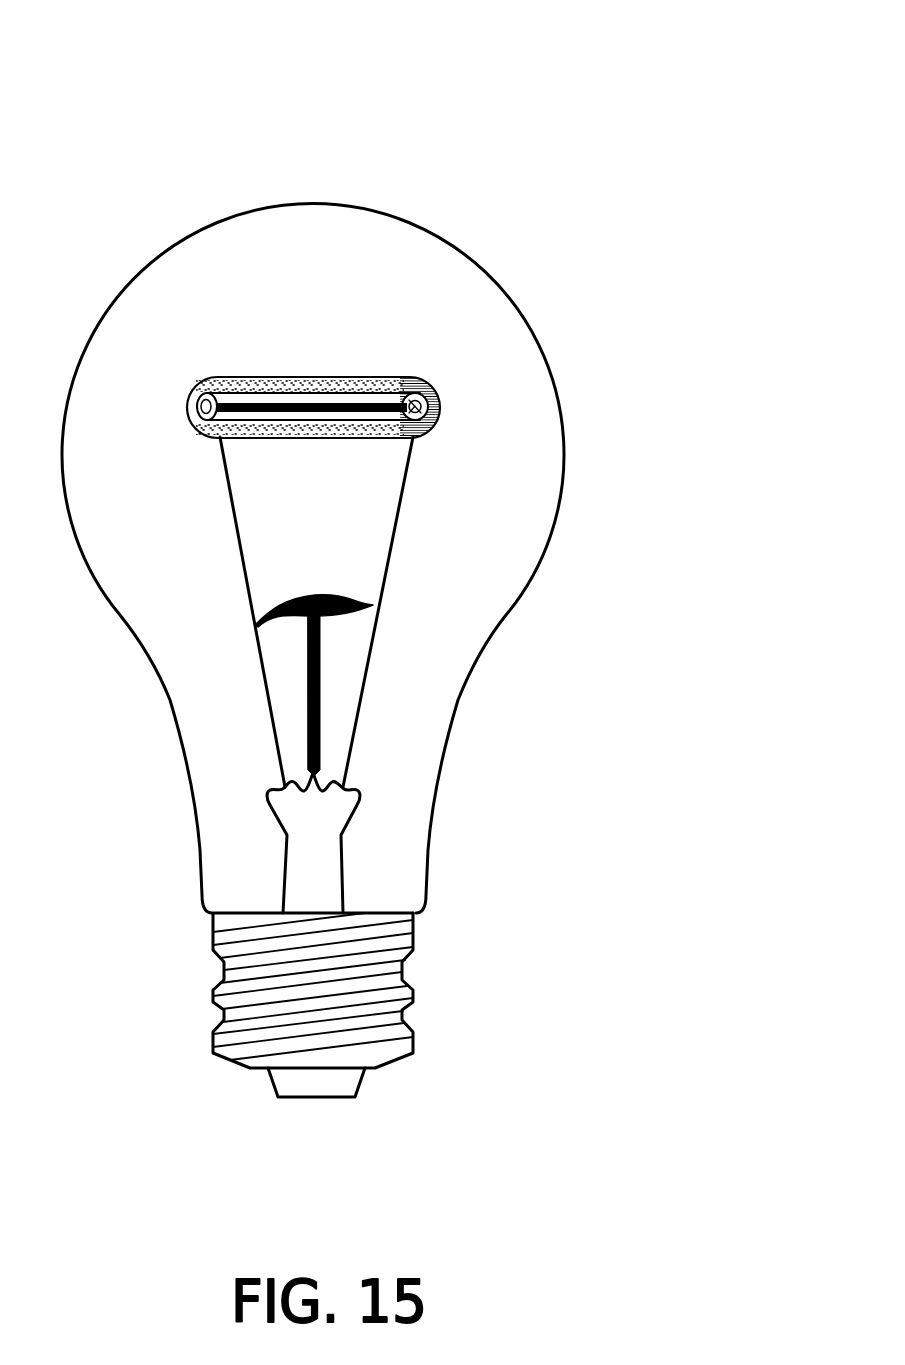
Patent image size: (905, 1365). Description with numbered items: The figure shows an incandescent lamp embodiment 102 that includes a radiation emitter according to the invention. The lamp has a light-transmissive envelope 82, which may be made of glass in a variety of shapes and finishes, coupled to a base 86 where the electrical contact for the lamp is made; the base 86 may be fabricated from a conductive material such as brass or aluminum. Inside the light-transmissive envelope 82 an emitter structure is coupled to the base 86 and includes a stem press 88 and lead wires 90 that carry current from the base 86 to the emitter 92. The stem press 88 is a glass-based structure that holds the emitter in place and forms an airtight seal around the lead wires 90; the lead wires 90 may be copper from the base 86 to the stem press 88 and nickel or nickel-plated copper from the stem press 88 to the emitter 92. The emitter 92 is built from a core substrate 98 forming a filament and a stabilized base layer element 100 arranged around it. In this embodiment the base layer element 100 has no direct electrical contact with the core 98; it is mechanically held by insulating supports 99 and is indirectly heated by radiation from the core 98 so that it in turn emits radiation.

The incandescent lamp embodiment 102 is at (622, 77).
The light-transmissive envelope 82 is at (386, 214).
The base 86 is at (407, 993).
The stem press 88 is at (343, 873).
The lead wires 90 is at (372, 658).
The emitter 92 is at (312, 367).
The core substrate 98 is at (290, 408).
The insulating supports 99 is at (214, 416).
The stabilized base layer element 100 is at (231, 378).